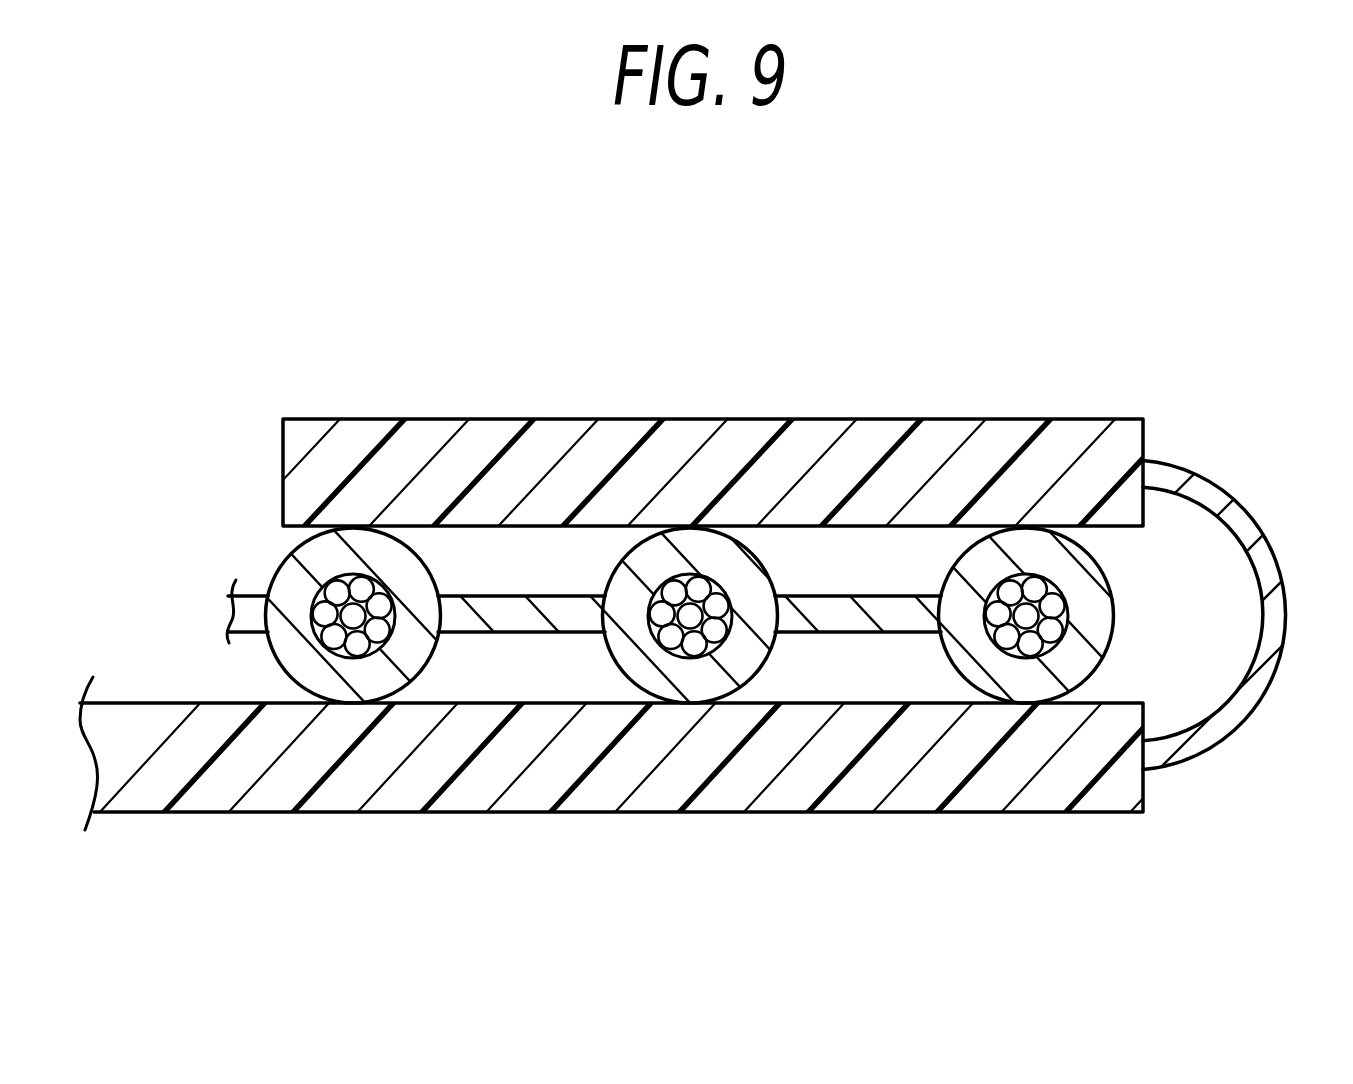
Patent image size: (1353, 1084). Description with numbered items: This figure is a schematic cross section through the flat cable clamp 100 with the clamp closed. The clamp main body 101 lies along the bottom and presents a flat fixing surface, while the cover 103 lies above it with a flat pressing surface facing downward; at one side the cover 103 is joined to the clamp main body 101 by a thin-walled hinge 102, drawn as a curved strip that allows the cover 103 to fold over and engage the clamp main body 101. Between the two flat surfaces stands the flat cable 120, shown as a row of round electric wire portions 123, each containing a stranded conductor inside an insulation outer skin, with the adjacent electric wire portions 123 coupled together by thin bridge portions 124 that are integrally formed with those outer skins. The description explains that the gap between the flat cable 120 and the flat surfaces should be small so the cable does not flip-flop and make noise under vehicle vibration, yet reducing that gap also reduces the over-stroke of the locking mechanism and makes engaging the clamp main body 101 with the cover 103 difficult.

The flat cable clamp 100 is at (817, 338).
The clamp main body 101 is at (977, 797).
The thin-walled hinge 102 is at (1265, 500).
The cover 103 is at (946, 432).
The flat cable 120 is at (405, 548).
The electric wire portion 123 is at (288, 578).
The bridge portion 124 is at (525, 603).